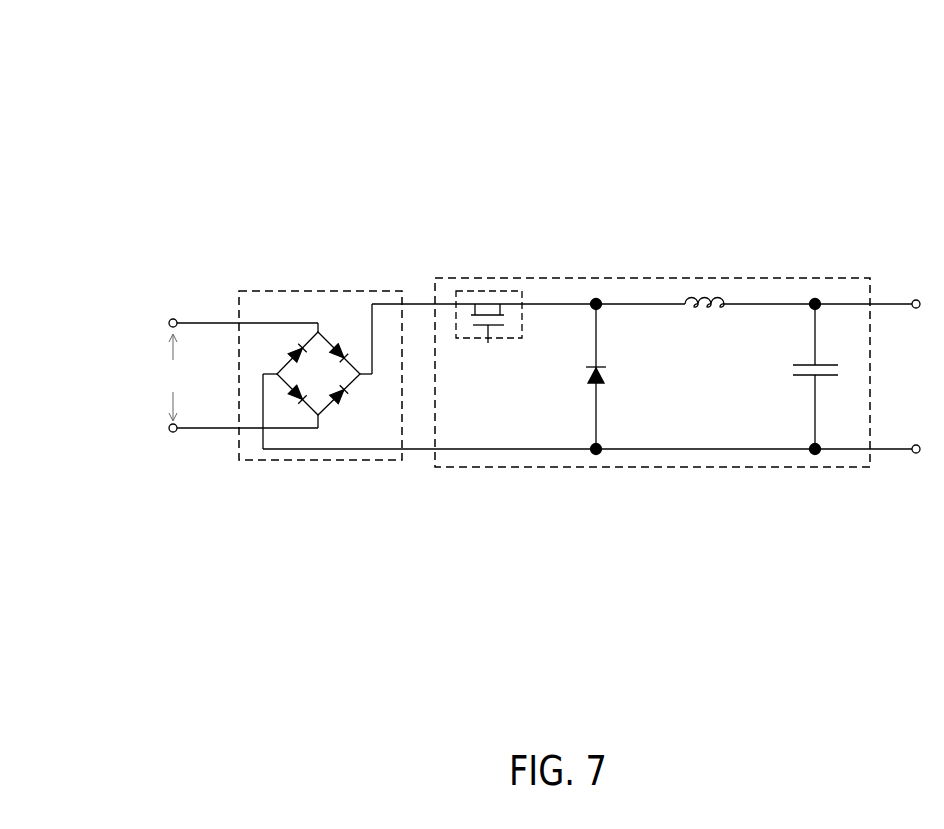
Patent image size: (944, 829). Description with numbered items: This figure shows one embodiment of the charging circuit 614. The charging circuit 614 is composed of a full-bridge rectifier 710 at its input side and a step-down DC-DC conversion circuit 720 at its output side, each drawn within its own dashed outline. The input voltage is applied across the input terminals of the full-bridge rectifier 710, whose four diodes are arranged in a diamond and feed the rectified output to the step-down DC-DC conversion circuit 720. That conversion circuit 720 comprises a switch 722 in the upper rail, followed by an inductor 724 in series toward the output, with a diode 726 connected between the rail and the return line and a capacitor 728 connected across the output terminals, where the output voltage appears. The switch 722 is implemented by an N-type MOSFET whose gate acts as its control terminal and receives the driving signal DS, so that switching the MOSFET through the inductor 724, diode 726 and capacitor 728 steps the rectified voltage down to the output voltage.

The charging circuit 614 is at (58, 57).
The full-bridge rectifier 710 is at (341, 291).
The step-down DC-DC conversion circuit 720 is at (845, 278).
The switch 722 is at (490, 291).
The inductor 724 is at (718, 301).
The diode 726 is at (604, 376).
The capacitor 728 is at (812, 377).